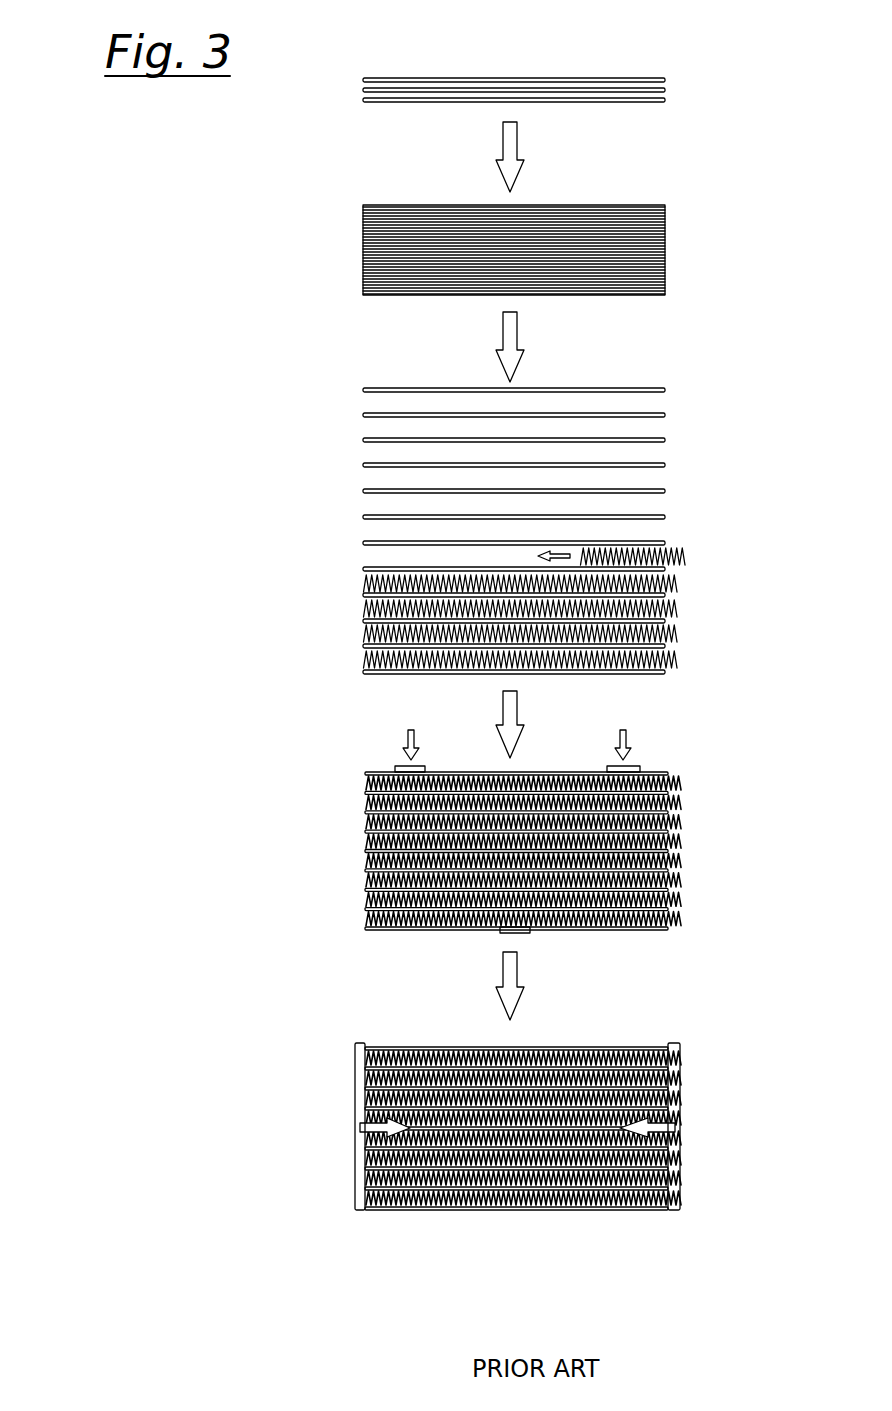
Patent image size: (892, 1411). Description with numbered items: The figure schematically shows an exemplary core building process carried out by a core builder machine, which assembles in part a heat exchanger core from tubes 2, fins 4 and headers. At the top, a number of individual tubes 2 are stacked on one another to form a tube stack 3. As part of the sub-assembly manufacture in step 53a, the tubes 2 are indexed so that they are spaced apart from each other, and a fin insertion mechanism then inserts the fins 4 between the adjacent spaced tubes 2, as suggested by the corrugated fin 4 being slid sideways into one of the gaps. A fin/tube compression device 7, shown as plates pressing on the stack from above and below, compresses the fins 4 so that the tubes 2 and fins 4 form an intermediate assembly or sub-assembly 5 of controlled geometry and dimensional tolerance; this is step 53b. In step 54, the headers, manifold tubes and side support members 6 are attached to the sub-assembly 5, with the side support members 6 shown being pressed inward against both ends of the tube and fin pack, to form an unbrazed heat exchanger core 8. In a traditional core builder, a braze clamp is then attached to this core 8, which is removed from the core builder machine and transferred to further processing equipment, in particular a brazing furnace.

The tube 2 is at (653, 78).
The tube stack 3 is at (665, 225).
The fin 4 is at (686, 556).
The sub-assembly 5 is at (698, 807).
The side support member 6 is at (678, 1040).
The fin/tube compression device 7 is at (607, 765).
The unbrazed heat exchanger core 8 is at (552, 1158).
The sub-assembly manufacture step 53a is at (458, 531).
The compression step 53b is at (461, 875).
The header and side support attachment step 54 is at (480, 1158).